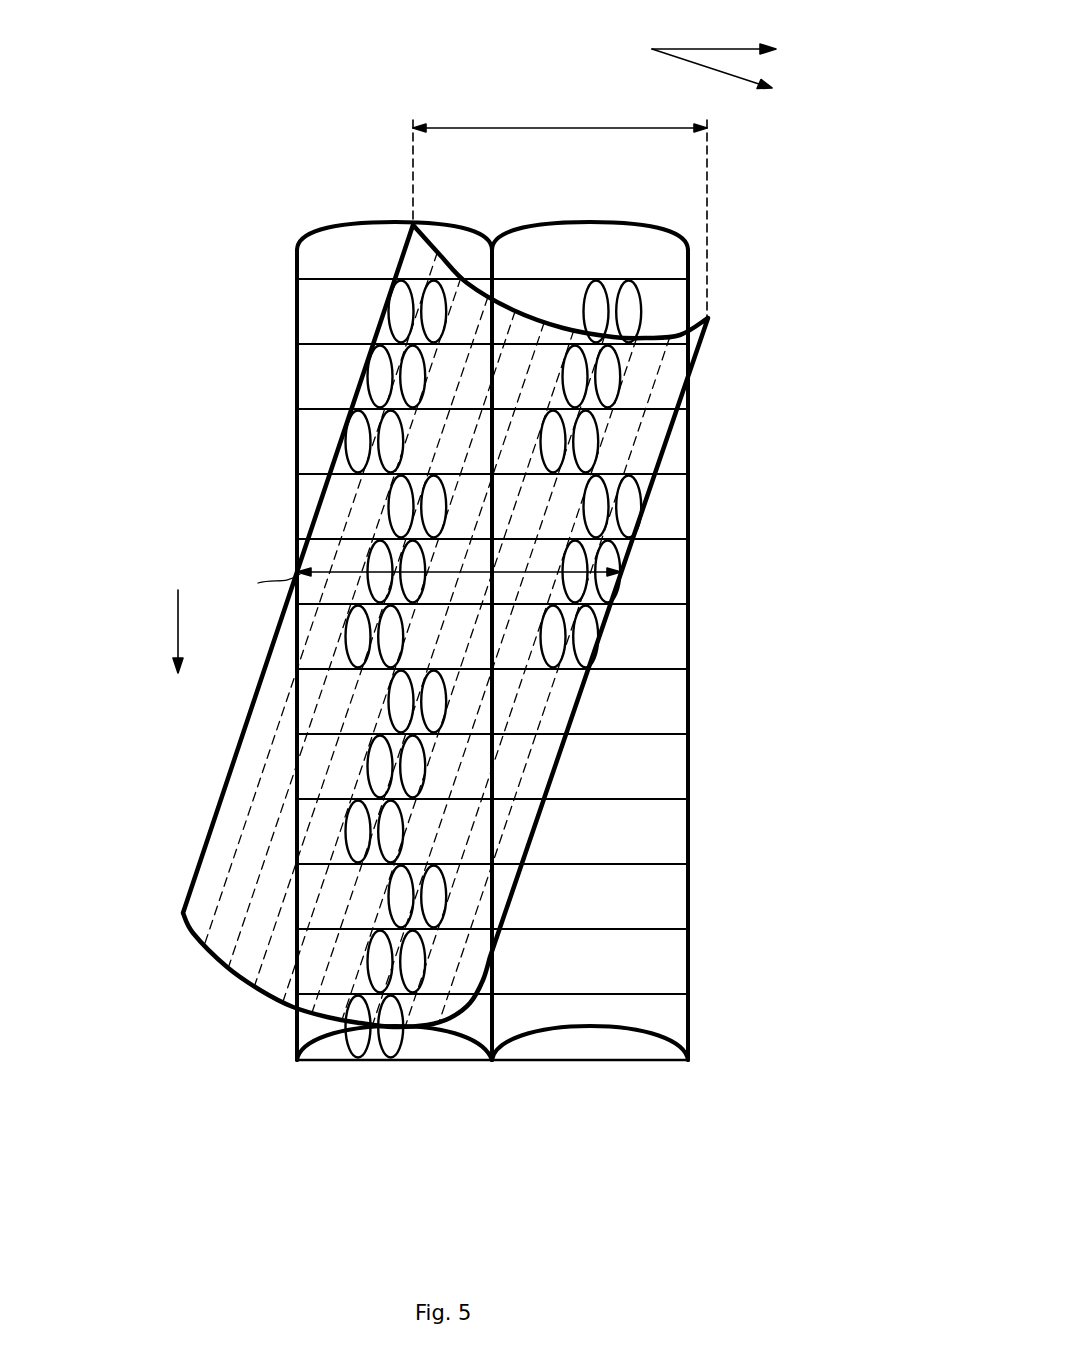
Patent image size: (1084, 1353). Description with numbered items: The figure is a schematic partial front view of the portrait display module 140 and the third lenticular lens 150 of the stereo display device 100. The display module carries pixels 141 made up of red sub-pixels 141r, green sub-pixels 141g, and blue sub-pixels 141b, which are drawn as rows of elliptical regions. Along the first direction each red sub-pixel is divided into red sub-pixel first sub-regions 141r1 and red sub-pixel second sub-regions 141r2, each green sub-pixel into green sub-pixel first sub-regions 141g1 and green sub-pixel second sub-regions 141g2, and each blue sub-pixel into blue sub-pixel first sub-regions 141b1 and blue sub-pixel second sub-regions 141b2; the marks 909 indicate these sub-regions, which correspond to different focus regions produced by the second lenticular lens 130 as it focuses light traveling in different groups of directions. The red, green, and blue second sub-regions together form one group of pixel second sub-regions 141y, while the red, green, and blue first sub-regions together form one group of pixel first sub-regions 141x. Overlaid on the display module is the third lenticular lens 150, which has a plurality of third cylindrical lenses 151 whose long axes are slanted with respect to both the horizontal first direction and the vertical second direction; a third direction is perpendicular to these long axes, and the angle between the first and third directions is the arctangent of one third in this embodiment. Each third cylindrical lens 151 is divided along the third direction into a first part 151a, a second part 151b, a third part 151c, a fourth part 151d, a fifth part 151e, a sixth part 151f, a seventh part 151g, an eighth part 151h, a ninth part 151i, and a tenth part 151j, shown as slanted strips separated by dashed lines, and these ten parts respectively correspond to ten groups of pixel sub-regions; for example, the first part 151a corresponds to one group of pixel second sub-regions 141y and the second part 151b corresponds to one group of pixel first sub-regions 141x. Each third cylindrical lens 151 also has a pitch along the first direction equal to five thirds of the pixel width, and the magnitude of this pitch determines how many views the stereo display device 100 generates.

The stereo display device 100 is at (143, 112).
The marks 909 is at (460, 278).
The second lenticular lens 130 is at (600, 221).
The portrait display module 140 is at (690, 297).
The third lenticular lens 150 is at (690, 443).
The pixels 141 is at (128, 283).
The red sub-pixels 141r is at (208, 273).
The green sub-pixels 141g is at (208, 338).
The blue sub-pixels 141b is at (208, 405).
The red sub-pixel first sub-regions 141r1 is at (431, 288).
The red sub-pixel second sub-regions 141r2 is at (388, 318).
The green sub-pixel first sub-regions 141g1 is at (413, 357).
The green sub-pixel second sub-regions 141g2 is at (366, 385).
The blue sub-pixel first sub-regions 141b1 is at (390, 423).
The blue sub-pixel second sub-regions 141b2 is at (353, 452).
The pixel second sub-regions 141y is at (343, 477).
The pixel first sub-regions 141x is at (377, 475).
The third cylindrical lenses 151 is at (468, 1172).
The first part 151a is at (192, 925).
The second part 151b is at (215, 950).
The third part 151c is at (248, 967).
The fourth part 151d is at (270, 997).
The fifth part 151e is at (297, 1005).
The sixth part 151f is at (322, 1005).
The seventh part 151g is at (356, 1000).
The eighth part 151h is at (396, 1010).
The ninth part 151i is at (428, 1005).
The tenth part 151j is at (462, 995).